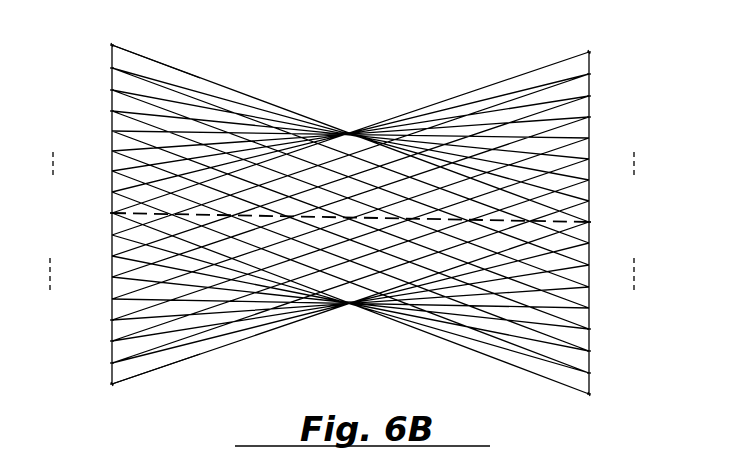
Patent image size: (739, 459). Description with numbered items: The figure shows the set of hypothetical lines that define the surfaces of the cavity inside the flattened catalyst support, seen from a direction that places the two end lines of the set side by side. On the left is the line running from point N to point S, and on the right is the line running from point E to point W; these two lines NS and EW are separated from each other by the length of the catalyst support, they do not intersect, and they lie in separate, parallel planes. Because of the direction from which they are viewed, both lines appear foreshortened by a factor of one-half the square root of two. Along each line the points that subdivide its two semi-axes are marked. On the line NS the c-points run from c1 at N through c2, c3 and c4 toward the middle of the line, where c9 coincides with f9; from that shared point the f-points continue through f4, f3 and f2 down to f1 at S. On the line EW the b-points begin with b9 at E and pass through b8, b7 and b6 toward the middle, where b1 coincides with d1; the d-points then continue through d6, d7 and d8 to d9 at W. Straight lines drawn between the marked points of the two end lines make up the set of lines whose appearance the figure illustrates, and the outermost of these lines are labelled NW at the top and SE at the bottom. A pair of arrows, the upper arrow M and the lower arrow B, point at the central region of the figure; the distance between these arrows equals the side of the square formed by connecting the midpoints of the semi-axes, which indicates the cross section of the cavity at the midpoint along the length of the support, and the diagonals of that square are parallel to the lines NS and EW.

The end point of line NS N is at (111, 35).
The end point of line NS S is at (110, 398).
The end point of line EW E is at (586, 41).
The end point of line EW W is at (586, 404).
The northwest boundary line NW is at (185, 70).
The southeast boundary line SE is at (183, 363).
The arrow M is at (349, 122).
The lower convergence point B is at (349, 316).
The point on semi-axis c1 is at (112, 45).
The point on semi-axis c2 is at (112, 68).
The point on semi-axis c3 is at (112, 90).
The point on semi-axis c4 is at (112, 111).
The point on semi-axis c9 is at (112, 213).
The point on semi-axis f9 is at (112, 213).
The point on semi-axis f4 is at (112, 320).
The point on semi-axis f3 is at (112, 341).
The point on semi-axis f2 is at (112, 363).
The point on semi-axis f1 is at (112, 384).
The point on semi-axis b9 is at (591, 51).
The point on semi-axis b8 is at (591, 74).
The point on semi-axis b7 is at (591, 96).
The point on semi-axis b6 is at (591, 117).
The point on semi-axis b1 is at (591, 222).
The point on semi-axis d1 is at (591, 222).
The point on semi-axis d6 is at (591, 329).
The point on semi-axis d7 is at (591, 351).
The point on semi-axis d8 is at (591, 373).
The point on semi-axis d9 is at (591, 394).